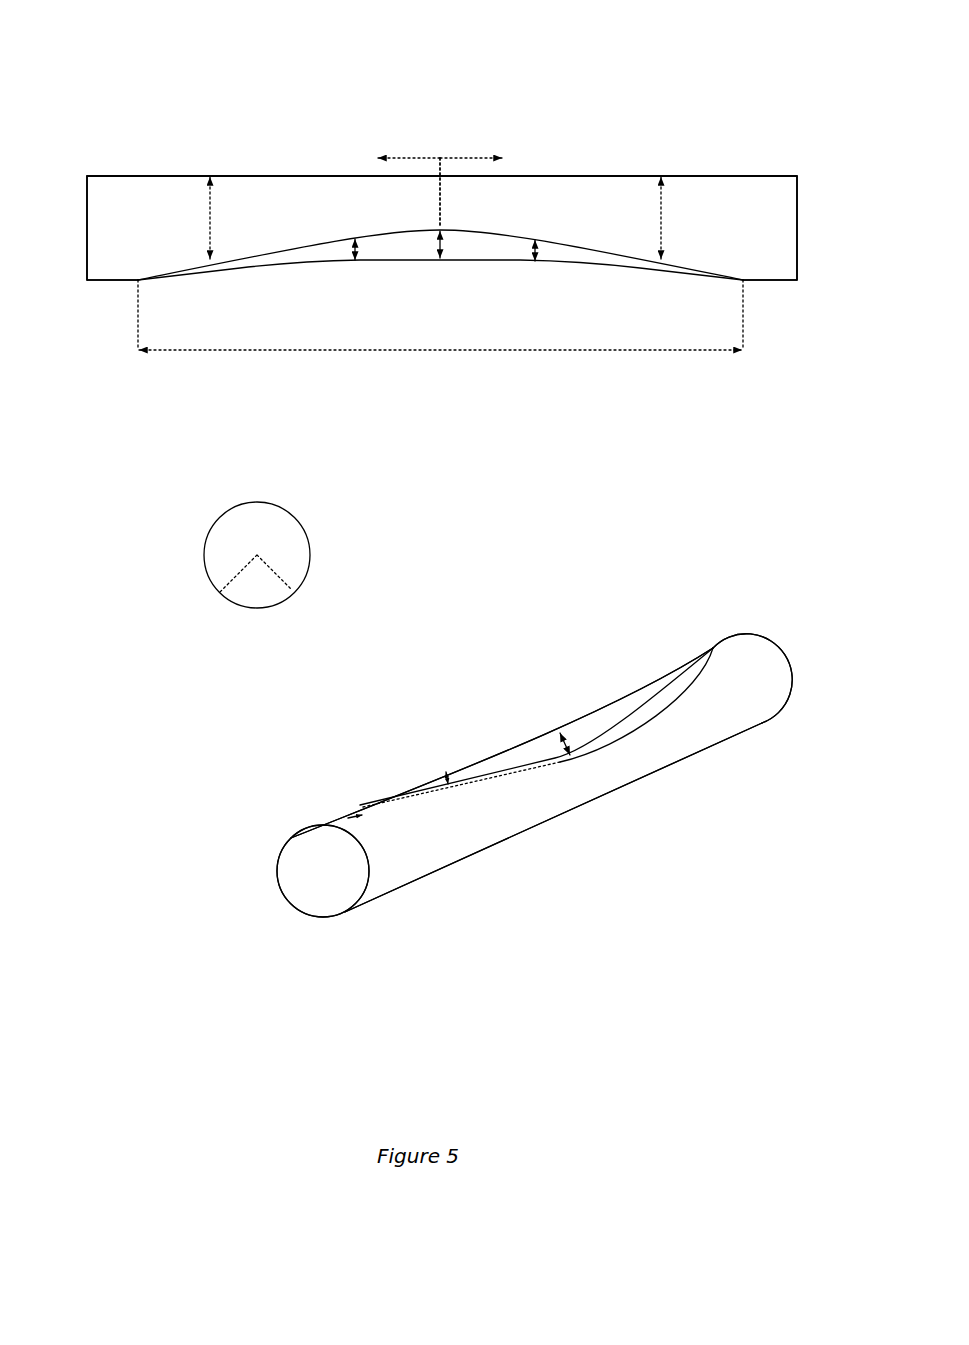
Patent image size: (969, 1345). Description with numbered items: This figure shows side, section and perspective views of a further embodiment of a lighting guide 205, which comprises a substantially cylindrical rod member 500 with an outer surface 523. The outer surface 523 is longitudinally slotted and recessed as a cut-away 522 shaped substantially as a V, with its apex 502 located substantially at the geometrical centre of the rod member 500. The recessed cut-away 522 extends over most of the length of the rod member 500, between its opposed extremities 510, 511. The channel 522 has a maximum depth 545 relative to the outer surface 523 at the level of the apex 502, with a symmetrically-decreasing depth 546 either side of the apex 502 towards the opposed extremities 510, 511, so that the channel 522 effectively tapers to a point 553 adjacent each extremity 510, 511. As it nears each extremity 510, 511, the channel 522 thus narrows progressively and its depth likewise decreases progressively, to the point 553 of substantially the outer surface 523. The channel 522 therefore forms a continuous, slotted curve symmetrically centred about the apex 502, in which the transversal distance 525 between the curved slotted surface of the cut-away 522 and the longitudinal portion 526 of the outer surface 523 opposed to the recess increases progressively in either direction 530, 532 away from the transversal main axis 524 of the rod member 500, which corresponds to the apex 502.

The lighting guide 205 is at (185, 96).
The rod member 500 is at (748, 174).
The apex 502 is at (440, 233).
The extremity 510 is at (85, 229).
The extremity 511 is at (799, 229).
The cut-away 522 is at (276, 257).
The outer surface 523 is at (354, 812).
The transversal main axis 524 is at (440, 198).
The transversal distance 525 is at (208, 196).
The longitudinal portion 526 is at (577, 174).
The direction 530 is at (402, 157).
The direction 532 is at (485, 157).
The maximum depth 545 is at (442, 257).
The symmetrically-decreasing depth 546 is at (350, 262).
The point 553 is at (138, 280).